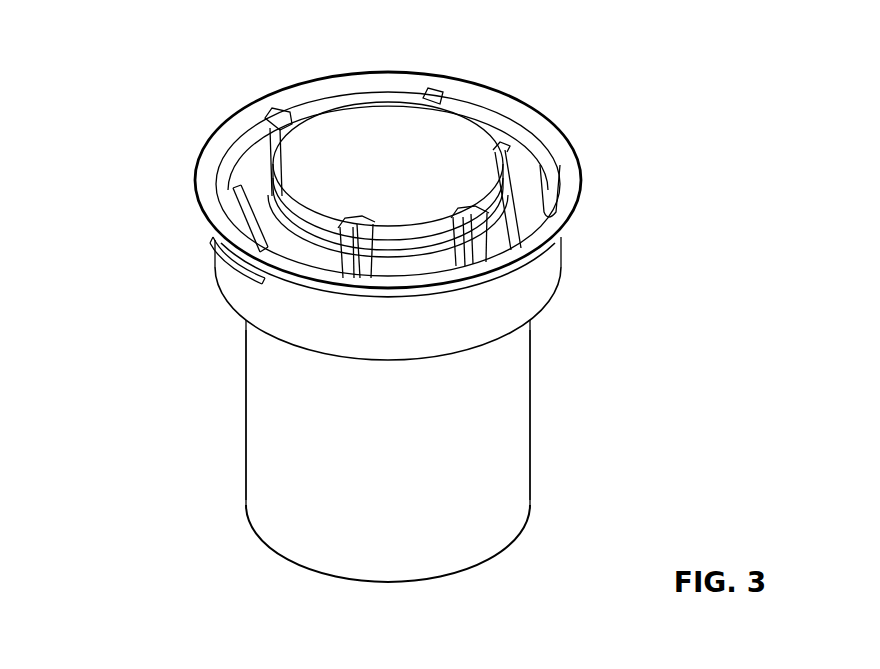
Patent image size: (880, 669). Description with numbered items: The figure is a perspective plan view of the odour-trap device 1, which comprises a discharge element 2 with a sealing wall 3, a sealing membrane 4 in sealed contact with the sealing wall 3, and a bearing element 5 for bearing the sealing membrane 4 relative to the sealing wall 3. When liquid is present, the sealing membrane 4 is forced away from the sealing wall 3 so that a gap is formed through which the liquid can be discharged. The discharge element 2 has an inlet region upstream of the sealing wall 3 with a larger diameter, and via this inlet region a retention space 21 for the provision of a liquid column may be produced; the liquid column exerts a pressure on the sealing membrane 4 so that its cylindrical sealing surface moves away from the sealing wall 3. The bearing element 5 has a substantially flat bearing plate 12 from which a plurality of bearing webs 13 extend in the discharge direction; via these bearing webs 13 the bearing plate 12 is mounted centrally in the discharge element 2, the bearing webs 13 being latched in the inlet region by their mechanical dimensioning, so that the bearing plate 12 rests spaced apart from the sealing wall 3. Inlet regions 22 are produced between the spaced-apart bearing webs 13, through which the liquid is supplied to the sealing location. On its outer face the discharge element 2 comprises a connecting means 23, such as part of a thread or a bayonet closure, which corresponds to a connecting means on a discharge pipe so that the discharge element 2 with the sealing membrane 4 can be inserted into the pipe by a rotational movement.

The odour-trap device 1 is at (532, 405).
The discharge element 2 is at (268, 445).
The sealing wall 3 is at (268, 406).
The sealing membrane 4 is at (433, 265).
The bearing element 5 is at (418, 153).
The bearing plate 12 is at (358, 140).
The bearing webs 13 is at (277, 122).
The retention space 21 is at (305, 257).
The inlet regions 22 is at (498, 156).
The connecting means 23 is at (228, 253).